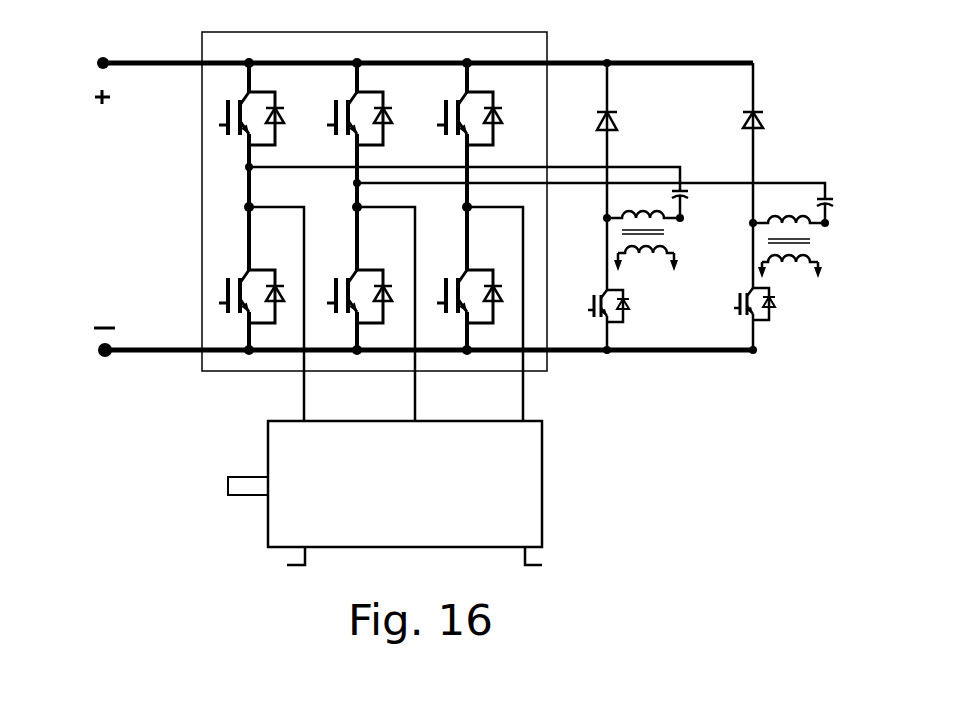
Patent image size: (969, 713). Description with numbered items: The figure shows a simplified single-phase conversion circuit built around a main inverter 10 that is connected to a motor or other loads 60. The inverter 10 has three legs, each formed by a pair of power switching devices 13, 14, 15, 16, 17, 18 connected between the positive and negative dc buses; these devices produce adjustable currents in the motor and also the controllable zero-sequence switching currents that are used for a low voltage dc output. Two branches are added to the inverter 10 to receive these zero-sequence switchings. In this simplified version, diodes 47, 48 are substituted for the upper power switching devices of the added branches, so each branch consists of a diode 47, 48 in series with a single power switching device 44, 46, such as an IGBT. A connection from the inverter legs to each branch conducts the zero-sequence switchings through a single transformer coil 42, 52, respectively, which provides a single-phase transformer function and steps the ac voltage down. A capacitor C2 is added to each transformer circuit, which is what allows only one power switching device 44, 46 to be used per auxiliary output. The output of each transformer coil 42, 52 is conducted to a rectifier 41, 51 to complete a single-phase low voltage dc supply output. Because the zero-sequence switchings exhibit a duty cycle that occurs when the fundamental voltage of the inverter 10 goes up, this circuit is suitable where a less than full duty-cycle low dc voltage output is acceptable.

The inverter 10 is at (556, 47).
The power switching device 13 is at (210, 119).
The power switching device 14 is at (211, 295).
The power switching device 15 is at (321, 116).
The power switching device 16 is at (325, 292).
The power switching device 17 is at (432, 115).
The power switching device 18 is at (435, 292).
The rectifier 41 is at (646, 289).
The transformer coil 42 is at (616, 237).
The power switching device 44 is at (586, 298).
The power switching device 46 is at (730, 298).
The diode 47 is at (599, 119).
The diode 48 is at (746, 120).
The rectifier 51 is at (791, 298).
The transformer coil 52 is at (751, 221).
The motor or other loads 60 is at (258, 450).
The capacitor C2 is at (684, 189).